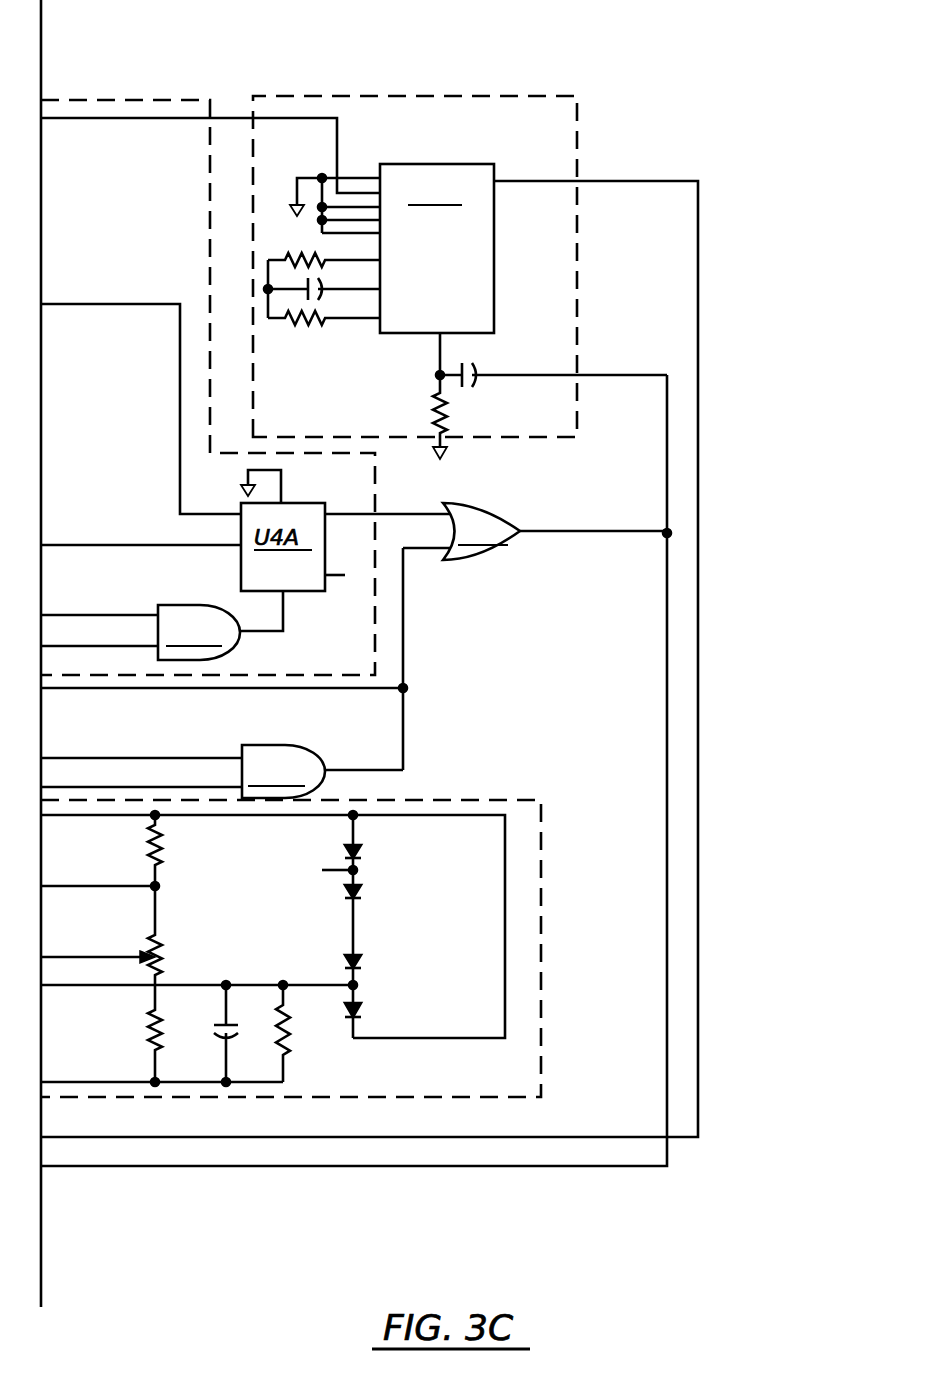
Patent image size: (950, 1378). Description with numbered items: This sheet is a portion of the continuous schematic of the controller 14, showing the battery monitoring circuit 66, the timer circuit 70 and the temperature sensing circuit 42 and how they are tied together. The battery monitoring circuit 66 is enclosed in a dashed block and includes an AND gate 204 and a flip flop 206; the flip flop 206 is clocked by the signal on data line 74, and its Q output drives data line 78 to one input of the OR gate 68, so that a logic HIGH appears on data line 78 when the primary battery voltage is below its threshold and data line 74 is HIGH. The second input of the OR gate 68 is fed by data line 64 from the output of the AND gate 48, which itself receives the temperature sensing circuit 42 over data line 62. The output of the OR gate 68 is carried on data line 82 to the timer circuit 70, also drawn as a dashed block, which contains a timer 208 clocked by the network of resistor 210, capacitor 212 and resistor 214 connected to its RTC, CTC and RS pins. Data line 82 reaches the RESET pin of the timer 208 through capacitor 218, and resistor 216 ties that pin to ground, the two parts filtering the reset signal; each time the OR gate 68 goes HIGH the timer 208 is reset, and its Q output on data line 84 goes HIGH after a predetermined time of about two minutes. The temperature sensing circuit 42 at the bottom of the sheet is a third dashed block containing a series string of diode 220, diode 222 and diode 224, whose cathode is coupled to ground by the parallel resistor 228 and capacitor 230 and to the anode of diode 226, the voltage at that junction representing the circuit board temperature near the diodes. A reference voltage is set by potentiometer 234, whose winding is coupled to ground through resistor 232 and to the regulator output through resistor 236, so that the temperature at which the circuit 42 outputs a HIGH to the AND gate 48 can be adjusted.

The controller 14 is at (393, 1180).
The temperature sensing circuit 42 is at (516, 800).
The AND gate 48 is at (270, 745).
The data line 62 is at (186, 792).
The data line 64 is at (403, 665).
The battery monitoring circuit 66 is at (200, 100).
The OR gate 68 is at (505, 560).
The timer circuit 70 is at (528, 63).
The data line 74 is at (138, 520).
The data line 78 is at (398, 514).
The data line 82 is at (667, 618).
The data line 84 is at (597, 1137).
The AND gate 204 is at (185, 605).
The flip flop 206 is at (300, 591).
The timer 208 is at (430, 164).
The resistor 210 is at (296, 252).
The capacitor 212 is at (320, 289).
The resistor 214 is at (313, 330).
The resistor 216 is at (450, 413).
The capacitor 218 is at (482, 375).
The diode 220 is at (362, 853).
The diode 222 is at (362, 893).
The diode 224 is at (362, 963).
The diode 226 is at (362, 1009).
The resistor 228 is at (290, 1050).
The capacitor 230 is at (210, 1036).
The resistor 232 is at (148, 1045).
The potentiometer 234 is at (165, 967).
The resistor 236 is at (165, 860).